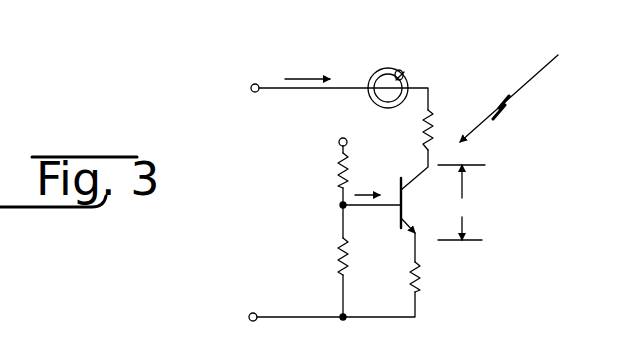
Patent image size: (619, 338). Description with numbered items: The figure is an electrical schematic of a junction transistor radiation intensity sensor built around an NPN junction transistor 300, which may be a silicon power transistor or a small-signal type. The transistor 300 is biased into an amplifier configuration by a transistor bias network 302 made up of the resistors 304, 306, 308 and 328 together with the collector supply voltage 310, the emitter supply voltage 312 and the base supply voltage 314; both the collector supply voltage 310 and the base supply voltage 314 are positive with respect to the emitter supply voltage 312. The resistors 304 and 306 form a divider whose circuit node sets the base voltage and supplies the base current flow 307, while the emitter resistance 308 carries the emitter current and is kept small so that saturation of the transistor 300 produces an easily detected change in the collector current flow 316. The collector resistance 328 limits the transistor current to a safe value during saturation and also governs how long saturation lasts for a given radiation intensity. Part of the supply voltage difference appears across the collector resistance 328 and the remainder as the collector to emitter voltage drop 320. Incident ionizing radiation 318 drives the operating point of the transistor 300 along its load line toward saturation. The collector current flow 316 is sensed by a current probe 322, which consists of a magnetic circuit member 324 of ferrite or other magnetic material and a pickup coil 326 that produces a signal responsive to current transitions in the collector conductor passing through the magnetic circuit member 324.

The NPN junction transistor 300 is at (418, 175).
The transistor bias network 302 is at (286, 241).
The resistor 304 is at (338, 172).
The resistor 306 is at (338, 262).
The base current flow 307 is at (355, 210).
The emitter resistance 308 is at (418, 275).
The collector supply voltage 310 is at (223, 80).
The emitter supply voltage 312 is at (215, 318).
The base supply voltage 314 is at (340, 137).
The collector current flow 316 is at (304, 78).
The ionizing radiation 318 is at (527, 87).
The collector to emitter voltage drop 320 is at (492, 207).
The current probe 322 is at (395, 75).
The magnetic circuit member 324 is at (375, 68).
The pickup coil 326 is at (408, 74).
The collector resistance 328 is at (434, 122).